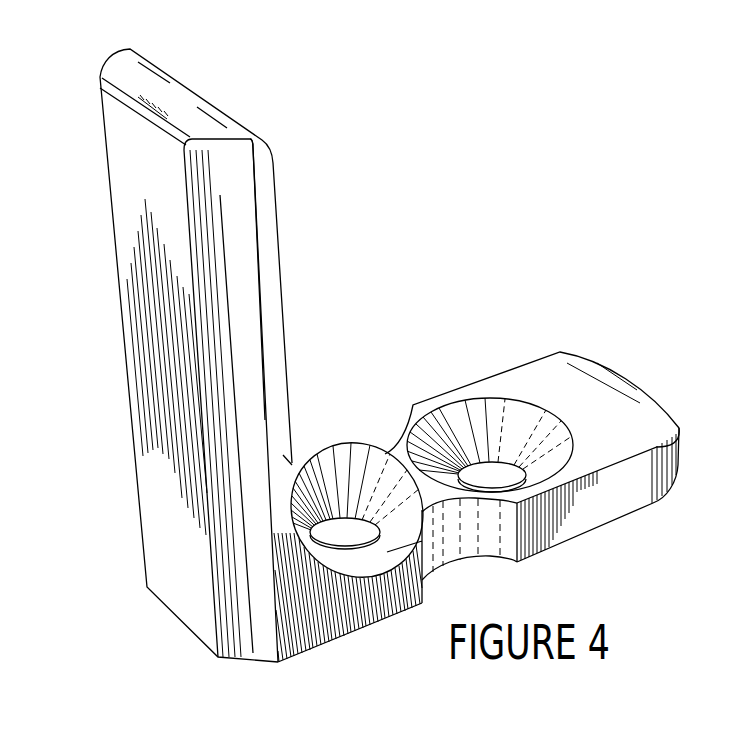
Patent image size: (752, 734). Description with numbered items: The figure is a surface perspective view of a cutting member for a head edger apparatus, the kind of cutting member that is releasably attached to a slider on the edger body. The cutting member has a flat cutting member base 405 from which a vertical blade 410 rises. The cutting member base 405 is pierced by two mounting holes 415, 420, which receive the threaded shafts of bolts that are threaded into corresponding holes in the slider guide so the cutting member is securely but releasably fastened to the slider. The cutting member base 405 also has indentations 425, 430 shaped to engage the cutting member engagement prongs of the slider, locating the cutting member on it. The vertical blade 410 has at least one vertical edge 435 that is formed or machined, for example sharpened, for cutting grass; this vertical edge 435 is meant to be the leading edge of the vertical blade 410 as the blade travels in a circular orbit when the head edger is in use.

The cutting member base 405 is at (627, 440).
The vertical blade 410 is at (130, 253).
The mounting hole 415 is at (490, 473).
The mounting hole 420 is at (346, 530).
The indentation 425 is at (483, 540).
The indentation 430 is at (333, 453).
The vertical edge 435 is at (256, 233).